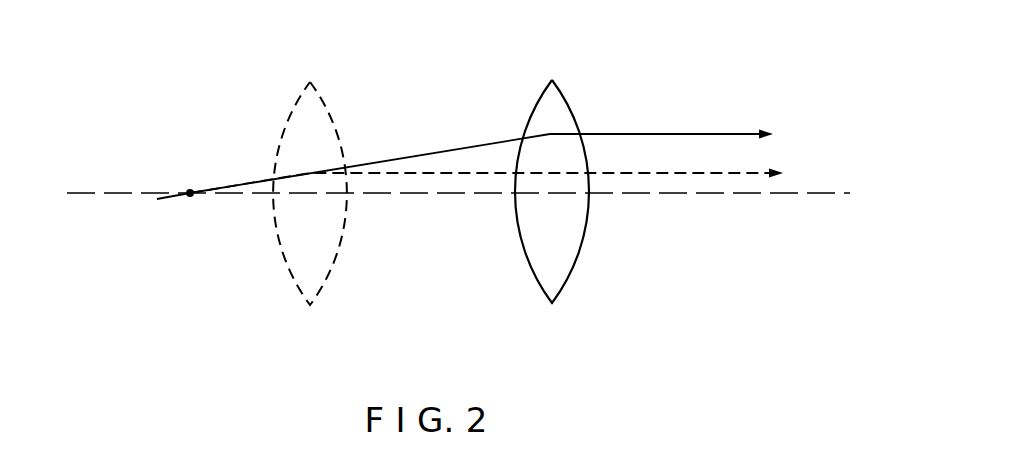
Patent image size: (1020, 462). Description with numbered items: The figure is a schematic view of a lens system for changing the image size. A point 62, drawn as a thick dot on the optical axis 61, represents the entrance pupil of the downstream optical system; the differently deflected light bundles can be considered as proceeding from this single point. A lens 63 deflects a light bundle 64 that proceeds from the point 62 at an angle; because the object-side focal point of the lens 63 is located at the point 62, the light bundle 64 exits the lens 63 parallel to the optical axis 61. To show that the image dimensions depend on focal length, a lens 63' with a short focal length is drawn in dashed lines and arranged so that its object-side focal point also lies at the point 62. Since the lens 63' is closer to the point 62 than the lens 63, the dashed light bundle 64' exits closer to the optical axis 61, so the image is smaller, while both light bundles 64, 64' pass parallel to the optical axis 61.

The optical axis 61 is at (97, 195).
The point 62 is at (192, 198).
The lens 63 is at (563, 155).
The lens with short focal length 63' is at (310, 163).
The light bundle 64 is at (465, 126).
The light bundle 64' is at (522, 131).